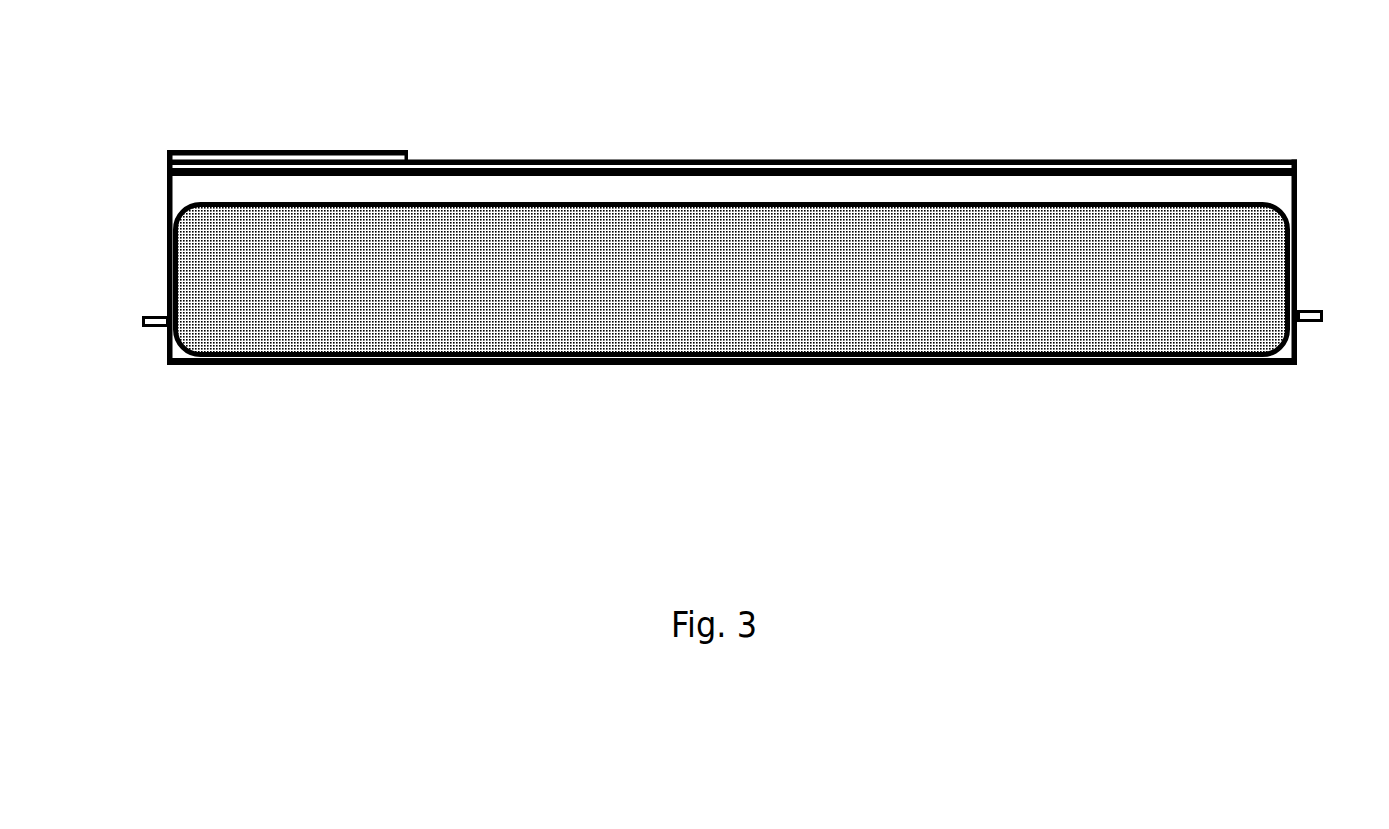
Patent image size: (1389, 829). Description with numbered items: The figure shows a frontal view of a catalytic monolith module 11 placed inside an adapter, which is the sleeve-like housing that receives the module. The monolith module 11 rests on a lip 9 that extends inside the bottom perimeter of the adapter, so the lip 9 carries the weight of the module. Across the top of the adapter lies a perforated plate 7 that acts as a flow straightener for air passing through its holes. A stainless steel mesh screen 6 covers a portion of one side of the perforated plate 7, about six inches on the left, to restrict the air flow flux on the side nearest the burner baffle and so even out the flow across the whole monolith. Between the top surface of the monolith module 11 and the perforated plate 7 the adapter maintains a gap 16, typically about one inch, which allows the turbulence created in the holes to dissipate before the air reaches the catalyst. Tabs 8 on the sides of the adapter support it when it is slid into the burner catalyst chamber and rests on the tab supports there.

The stainless steel mesh screen 6 is at (371, 152).
The perforated plate 7 is at (695, 158).
The tabs 8 is at (143, 329).
The lip 9 is at (268, 366).
The monolith module 11 is at (653, 314).
The gap 16 is at (898, 190).